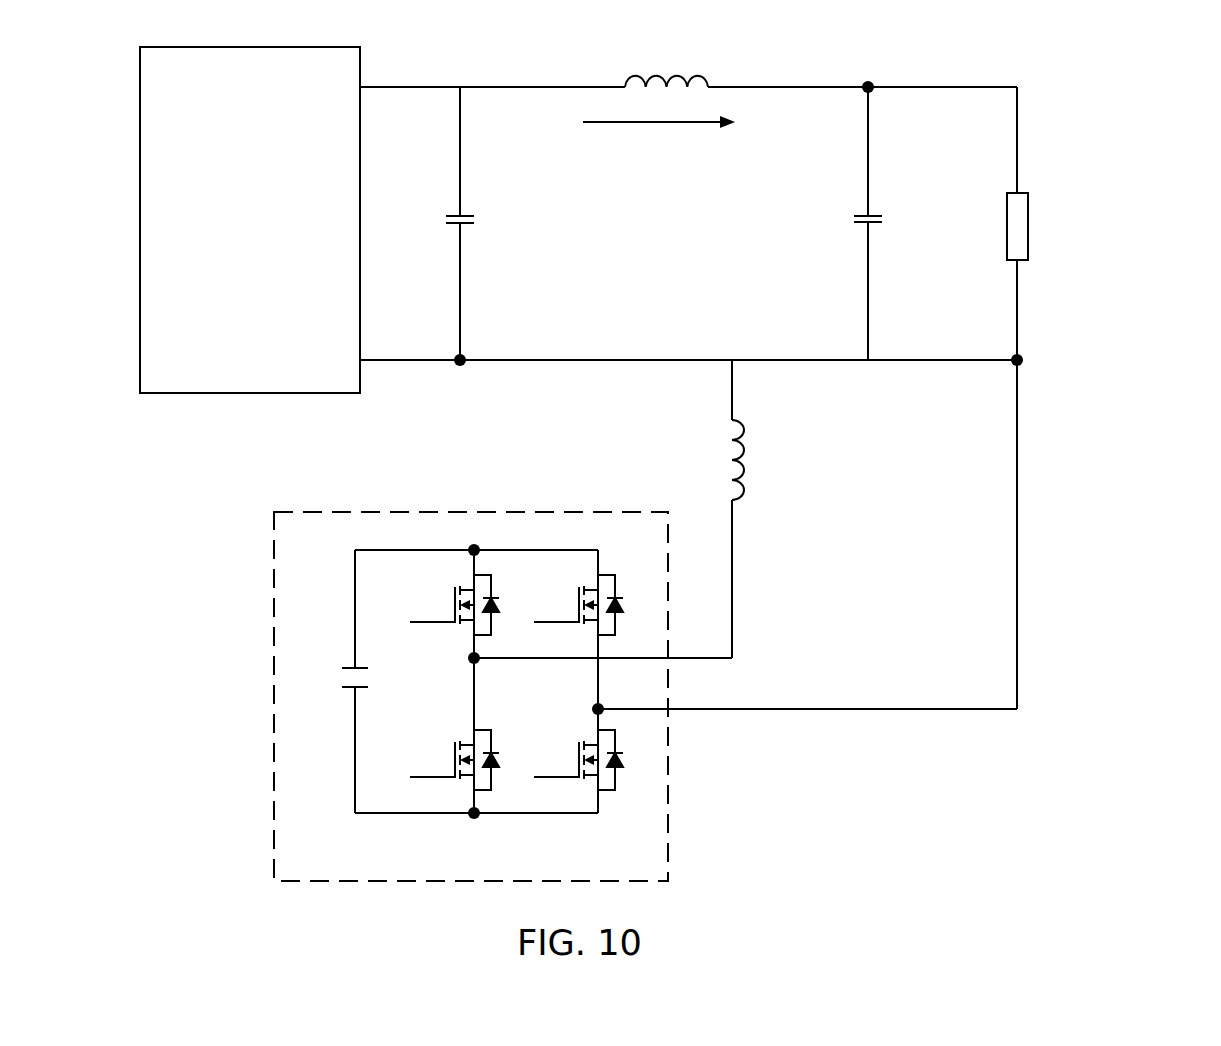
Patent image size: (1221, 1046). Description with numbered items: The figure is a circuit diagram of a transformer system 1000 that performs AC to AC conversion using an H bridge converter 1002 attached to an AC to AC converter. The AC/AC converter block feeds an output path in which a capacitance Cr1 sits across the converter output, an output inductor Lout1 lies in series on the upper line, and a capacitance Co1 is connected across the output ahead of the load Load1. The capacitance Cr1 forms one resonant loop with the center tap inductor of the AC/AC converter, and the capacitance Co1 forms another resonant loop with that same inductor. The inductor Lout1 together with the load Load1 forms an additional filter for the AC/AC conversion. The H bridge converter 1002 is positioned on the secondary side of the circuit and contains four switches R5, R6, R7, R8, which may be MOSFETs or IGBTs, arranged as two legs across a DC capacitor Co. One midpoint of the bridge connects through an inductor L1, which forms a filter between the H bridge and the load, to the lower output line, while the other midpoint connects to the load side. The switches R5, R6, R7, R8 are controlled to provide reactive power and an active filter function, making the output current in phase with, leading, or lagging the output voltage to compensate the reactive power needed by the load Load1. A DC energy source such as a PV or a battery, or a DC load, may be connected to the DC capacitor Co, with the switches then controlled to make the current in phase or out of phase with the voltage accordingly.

The transformer system 1000 is at (651, 463).
The H bridge converter 1002 is at (565, 696).
The switch R5 is at (454, 605).
The switch R6 is at (454, 760).
The switch R7 is at (578, 605).
The switch R8 is at (578, 760).
The inductor L1 is at (756, 460).
The output inductor Lout1 is at (666, 66).
The capacitance Cr1 is at (440, 223).
The capacitance Co1 is at (847, 223).
The DC capacitor Co is at (333, 675).
The load Load1 is at (979, 226).